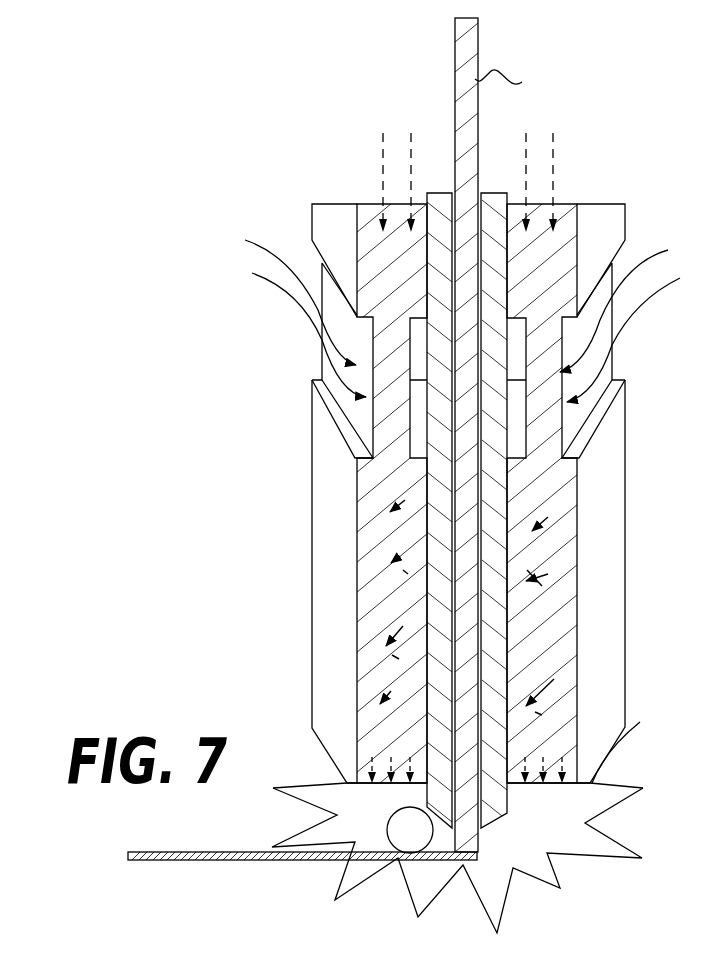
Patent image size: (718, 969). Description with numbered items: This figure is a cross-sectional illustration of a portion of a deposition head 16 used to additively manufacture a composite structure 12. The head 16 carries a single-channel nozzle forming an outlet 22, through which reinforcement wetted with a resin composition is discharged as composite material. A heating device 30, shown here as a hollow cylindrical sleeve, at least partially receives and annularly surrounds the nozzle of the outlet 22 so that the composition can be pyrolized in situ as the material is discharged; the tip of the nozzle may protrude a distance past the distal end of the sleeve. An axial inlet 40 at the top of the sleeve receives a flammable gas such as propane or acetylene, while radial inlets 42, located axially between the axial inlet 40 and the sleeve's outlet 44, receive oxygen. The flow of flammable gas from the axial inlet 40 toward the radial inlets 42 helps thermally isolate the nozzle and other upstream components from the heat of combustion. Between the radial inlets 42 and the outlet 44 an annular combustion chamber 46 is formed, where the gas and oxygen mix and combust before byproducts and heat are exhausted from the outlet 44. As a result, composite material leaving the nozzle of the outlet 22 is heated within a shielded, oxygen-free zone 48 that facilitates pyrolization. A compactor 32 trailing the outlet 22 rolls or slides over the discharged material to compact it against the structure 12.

The composite structure 12 is at (207, 860).
The deposition head 16 is at (206, 52).
The outlet 22 is at (214, 203).
The heating device 30 is at (346, 671).
The compactor 32 is at (398, 837).
The axial inlet 40 is at (403, 267).
The radial inlets 42 is at (361, 354).
The outlet of the sleeve 44 is at (553, 780).
The annular combustion chamber 46 is at (403, 609).
The shielded zone 48 is at (516, 851).